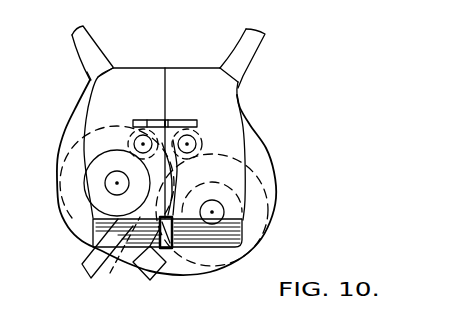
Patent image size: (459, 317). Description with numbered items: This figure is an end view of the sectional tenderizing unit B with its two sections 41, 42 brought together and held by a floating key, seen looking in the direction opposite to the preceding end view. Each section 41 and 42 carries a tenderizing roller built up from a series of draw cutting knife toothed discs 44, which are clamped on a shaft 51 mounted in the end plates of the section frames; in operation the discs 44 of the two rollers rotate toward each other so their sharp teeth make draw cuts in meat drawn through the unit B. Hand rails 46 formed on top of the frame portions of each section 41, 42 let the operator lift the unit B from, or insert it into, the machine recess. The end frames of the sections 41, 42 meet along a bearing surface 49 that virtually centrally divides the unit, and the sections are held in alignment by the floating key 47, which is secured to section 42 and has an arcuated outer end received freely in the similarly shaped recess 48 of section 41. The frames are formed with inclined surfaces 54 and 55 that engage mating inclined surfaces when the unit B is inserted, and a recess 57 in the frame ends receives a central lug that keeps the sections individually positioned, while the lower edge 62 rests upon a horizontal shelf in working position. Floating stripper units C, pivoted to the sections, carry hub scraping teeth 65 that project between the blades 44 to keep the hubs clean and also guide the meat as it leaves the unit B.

The sectional tenderizing unit B is at (152, 68).
The floating stripper units C is at (86, 272).
The section 41 is at (134, 67).
The section 42 is at (219, 47).
The draw cutting knife toothed discs 44 is at (58, 200).
The hand rails 46 is at (72, 35).
The floating key 47 is at (199, 106).
The recess 48 is at (152, 118).
The meeting or bearing surface 49 is at (176, 82).
The shaft 51 is at (118, 189).
The inclined surface 54 is at (84, 167).
The inclined surface 55 is at (248, 180).
The recess 57 is at (170, 248).
The lower edge 62 is at (224, 272).
The hub scraping teeth 65 is at (93, 237).